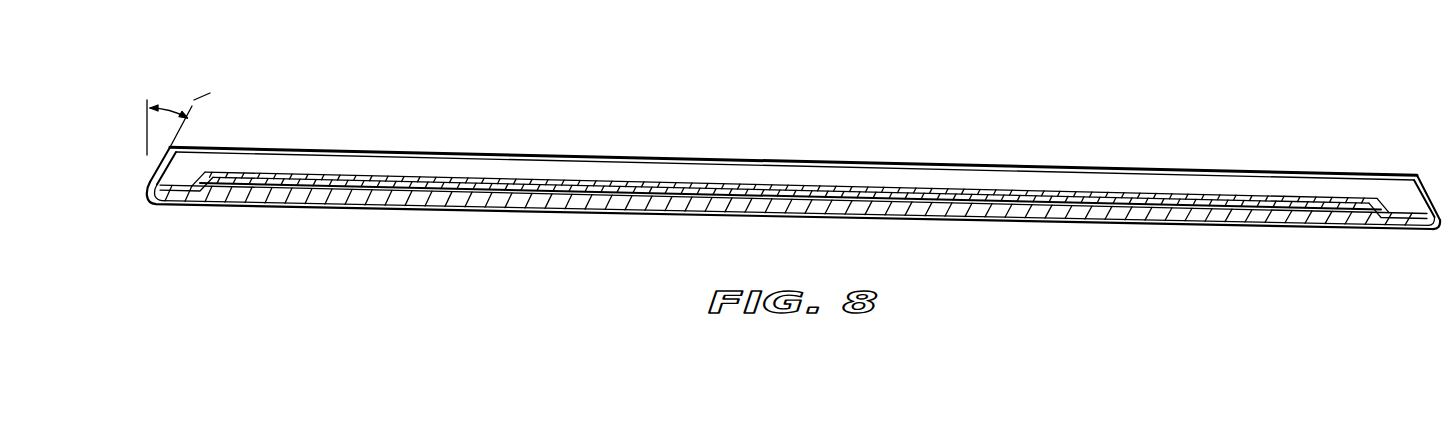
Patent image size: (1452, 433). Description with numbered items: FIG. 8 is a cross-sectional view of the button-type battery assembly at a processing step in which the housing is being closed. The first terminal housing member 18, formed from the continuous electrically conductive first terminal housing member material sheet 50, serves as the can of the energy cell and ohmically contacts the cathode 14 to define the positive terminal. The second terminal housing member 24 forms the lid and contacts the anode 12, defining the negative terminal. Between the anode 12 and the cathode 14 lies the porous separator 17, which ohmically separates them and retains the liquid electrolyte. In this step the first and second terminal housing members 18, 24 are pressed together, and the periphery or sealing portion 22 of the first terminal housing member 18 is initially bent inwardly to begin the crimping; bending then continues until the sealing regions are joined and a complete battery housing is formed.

The anode 12 is at (1170, 198).
The cathode 14 is at (1077, 214).
The porous separator 17 is at (1310, 202).
The first terminal housing member 18 is at (547, 212).
The periphery 22 is at (148, 178).
The second terminal housing member 24 is at (913, 188).
The first terminal housing member material sheet 50 is at (153, 212).